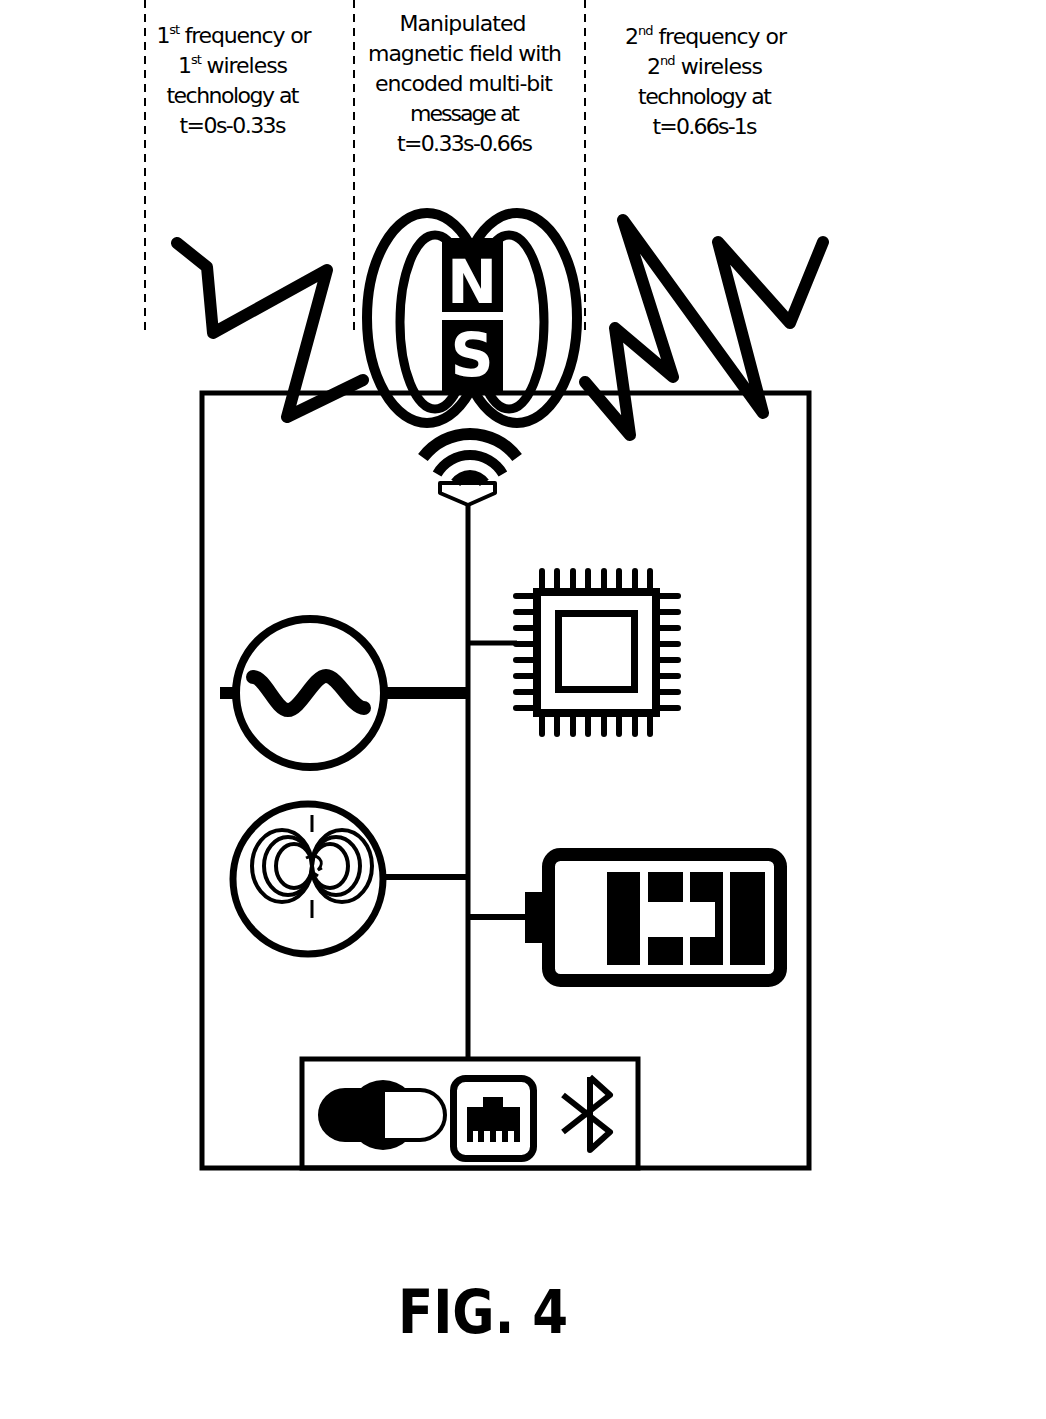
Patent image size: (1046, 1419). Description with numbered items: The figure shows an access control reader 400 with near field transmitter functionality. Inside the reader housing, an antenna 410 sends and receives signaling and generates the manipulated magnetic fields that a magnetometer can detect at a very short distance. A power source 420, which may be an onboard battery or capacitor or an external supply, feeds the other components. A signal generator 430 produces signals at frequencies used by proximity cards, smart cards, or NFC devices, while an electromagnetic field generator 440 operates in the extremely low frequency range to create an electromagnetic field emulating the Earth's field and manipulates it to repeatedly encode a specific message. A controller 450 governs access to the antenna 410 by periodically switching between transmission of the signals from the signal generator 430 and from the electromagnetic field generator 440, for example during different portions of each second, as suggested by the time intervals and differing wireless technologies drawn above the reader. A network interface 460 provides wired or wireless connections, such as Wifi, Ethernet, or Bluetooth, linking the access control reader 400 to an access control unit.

The access control reader 400 is at (202, 1168).
The antenna 410 is at (442, 492).
The power source 420 is at (697, 934).
The signal generator 430 is at (327, 749).
The electromagnetic field generator 440 is at (328, 942).
The controller 450 is at (615, 661).
The network interface 460 is at (642, 1115).